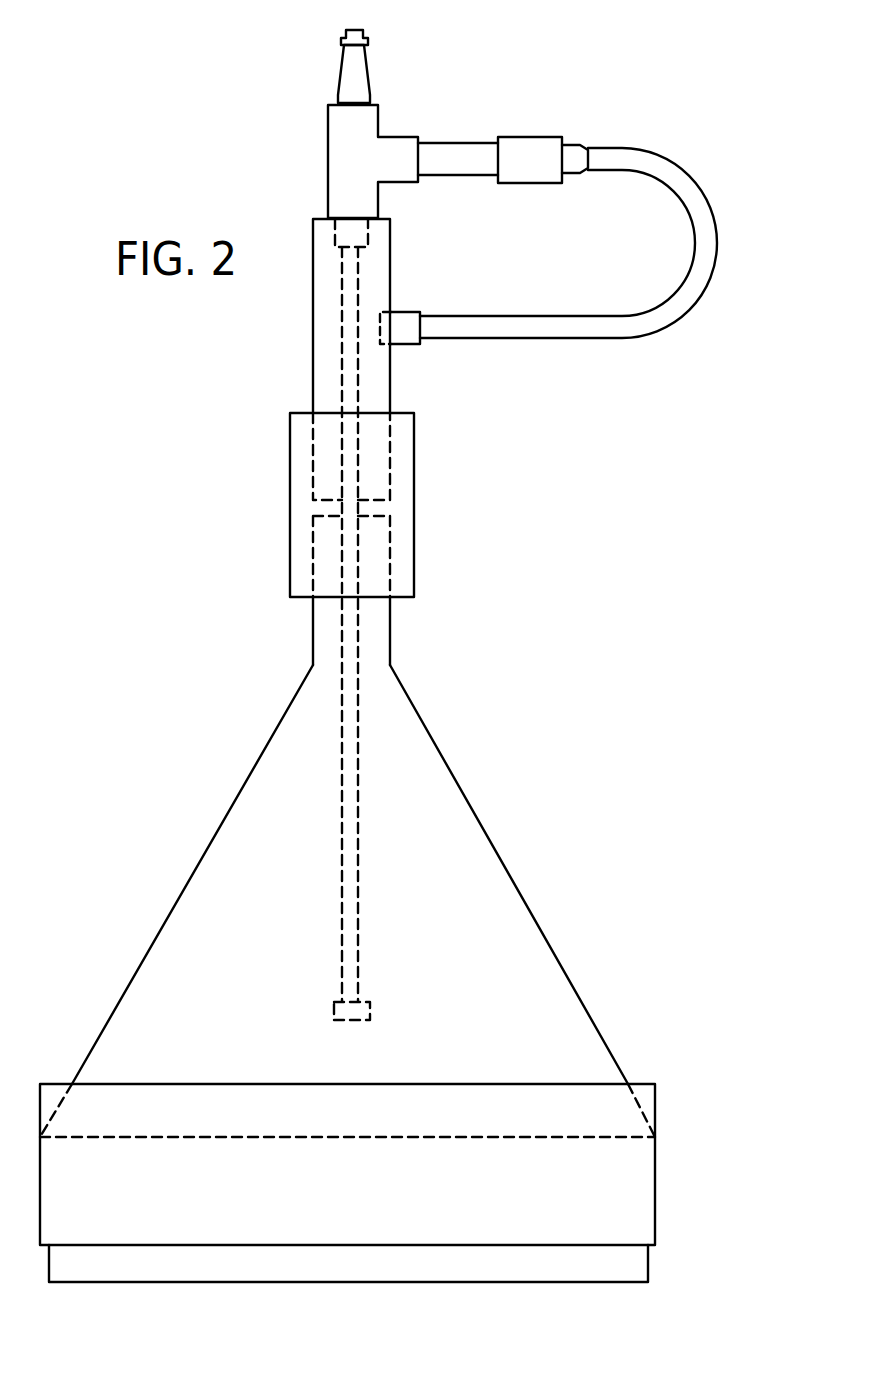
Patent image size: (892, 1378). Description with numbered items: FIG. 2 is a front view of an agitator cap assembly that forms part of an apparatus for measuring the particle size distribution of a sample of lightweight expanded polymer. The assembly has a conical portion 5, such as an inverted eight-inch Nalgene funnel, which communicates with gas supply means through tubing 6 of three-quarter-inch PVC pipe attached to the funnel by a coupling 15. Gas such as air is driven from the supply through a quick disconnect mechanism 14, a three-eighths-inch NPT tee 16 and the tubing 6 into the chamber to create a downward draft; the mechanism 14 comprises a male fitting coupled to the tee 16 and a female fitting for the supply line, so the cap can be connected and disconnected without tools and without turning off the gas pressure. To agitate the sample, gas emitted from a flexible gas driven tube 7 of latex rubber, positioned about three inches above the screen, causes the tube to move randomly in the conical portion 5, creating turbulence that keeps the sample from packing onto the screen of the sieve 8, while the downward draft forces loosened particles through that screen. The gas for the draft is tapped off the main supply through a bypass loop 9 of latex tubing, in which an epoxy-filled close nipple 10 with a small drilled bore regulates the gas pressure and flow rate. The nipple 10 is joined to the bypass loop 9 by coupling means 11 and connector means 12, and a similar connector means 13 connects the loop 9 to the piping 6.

The conical portion 5 is at (453, 762).
The tubing 6 is at (401, 394).
The flexible gas driven tube 7 is at (340, 969).
The sieve 8 is at (659, 1189).
The bypass loop 9 is at (707, 207).
The close nipple 10 is at (473, 142).
The coupling means 11 is at (535, 133).
The connector means 12 is at (572, 183).
The connector means 13 is at (403, 308).
The quick disconnect mechanism 14 is at (371, 62).
The coupling 15 is at (424, 523).
The tee 16 is at (398, 130).